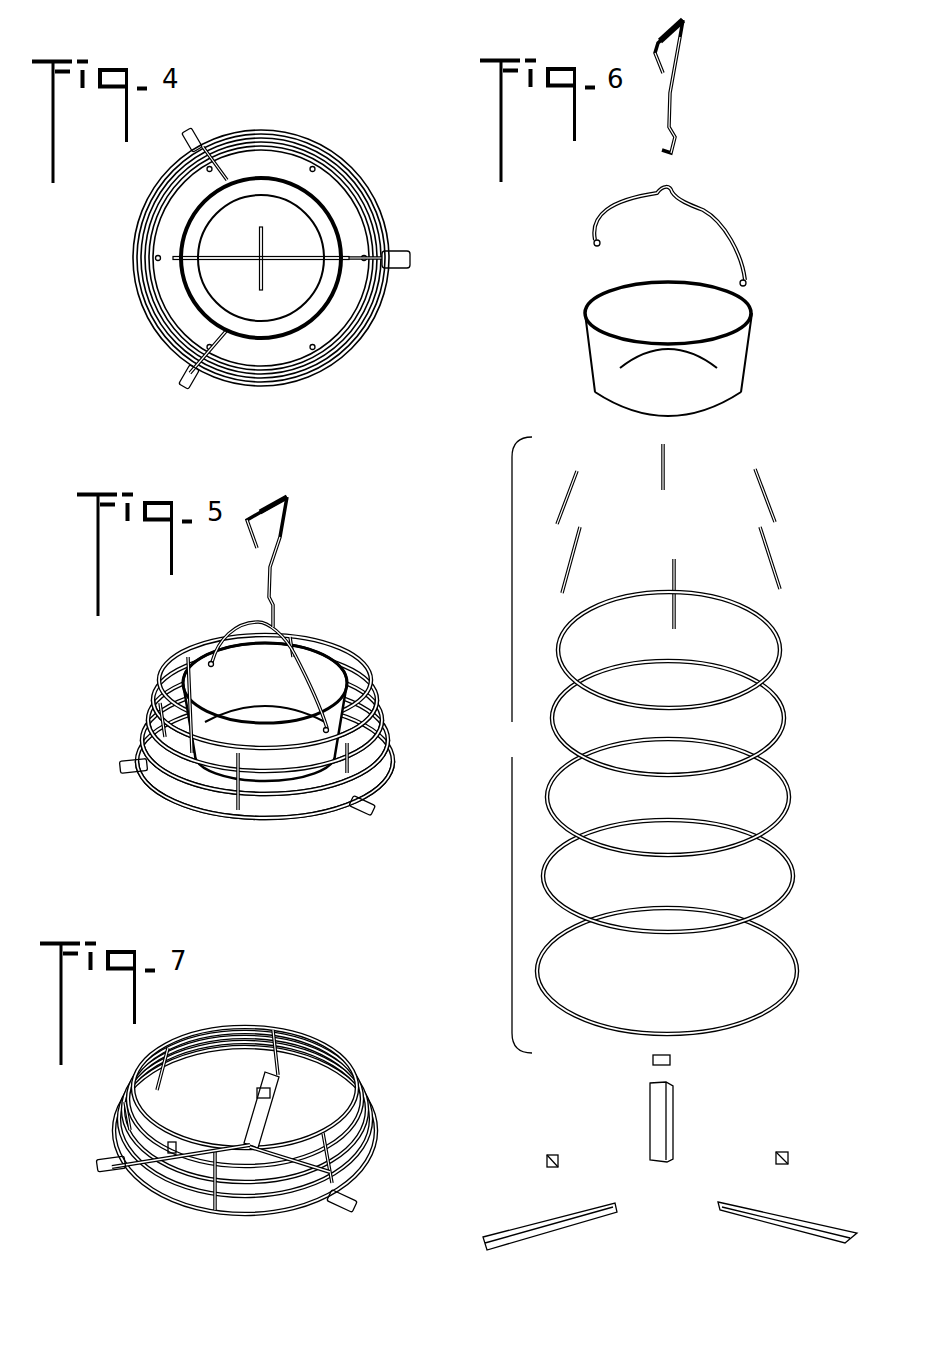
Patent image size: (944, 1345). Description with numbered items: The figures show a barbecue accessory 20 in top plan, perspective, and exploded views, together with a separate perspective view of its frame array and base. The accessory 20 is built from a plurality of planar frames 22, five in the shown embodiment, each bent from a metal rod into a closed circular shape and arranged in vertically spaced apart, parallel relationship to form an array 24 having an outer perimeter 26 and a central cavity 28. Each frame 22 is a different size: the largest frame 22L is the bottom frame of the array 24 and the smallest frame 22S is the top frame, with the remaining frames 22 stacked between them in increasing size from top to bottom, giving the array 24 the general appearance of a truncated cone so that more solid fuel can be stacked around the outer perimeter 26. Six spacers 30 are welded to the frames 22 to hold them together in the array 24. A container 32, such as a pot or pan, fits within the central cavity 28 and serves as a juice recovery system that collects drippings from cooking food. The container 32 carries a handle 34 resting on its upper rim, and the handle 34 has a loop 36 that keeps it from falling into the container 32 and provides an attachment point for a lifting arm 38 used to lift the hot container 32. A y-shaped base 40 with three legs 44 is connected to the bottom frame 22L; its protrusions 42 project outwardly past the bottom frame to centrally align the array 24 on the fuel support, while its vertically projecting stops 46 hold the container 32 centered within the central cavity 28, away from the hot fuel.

In FIG. 4, the barbecue accessory 20 is at (327, 120).
In FIG. 5, the barbecue accessory 20 is at (345, 598).
In FIG. 6, the barbecue accessory 20 is at (770, 147).
In FIG. 4, the planar frame 22 is at (345, 178).
In FIG. 5, the planar frame 22 is at (390, 742).
In FIG. 6, the planar frame 22 is at (780, 729).
In FIG. 7, the planar frame 22 is at (373, 1128).
In FIG. 4, the largest frame 22L is at (133, 282).
In FIG. 5, the largest frame 22L is at (380, 785).
In FIG. 6, the largest frame 22L is at (792, 968).
In FIG. 7, the largest frame 22L is at (367, 1173).
In FIG. 4, the smallest frame 22S is at (155, 250).
In FIG. 5, the smallest frame 22S is at (375, 695).
In FIG. 6, the smallest frame 22S is at (780, 657).
In FIG. 7, the smallest frame 22S is at (355, 1088).
In FIG. 4, the array 24 is at (392, 213).
In FIG. 5, the array 24 is at (375, 665).
In FIG. 6, the array 24 is at (676, 745).
In FIG. 7, the array 24 is at (350, 1050).
In FIG. 4, the outer perimeter 26 is at (390, 313).
In FIG. 5, the outer perimeter 26 is at (330, 818).
In FIG. 7, the outer perimeter 26 is at (307, 1222).
In FIG. 4, the central cavity 28 is at (182, 208).
In FIG. 5, the central cavity 28 is at (350, 712).
In FIG. 7, the central cavity 28 is at (283, 1100).
In FIG. 4, the spacer 30 is at (167, 347).
In FIG. 5, the spacer 30 is at (163, 680).
In FIG. 6, the spacer 30 is at (768, 507).
In FIG. 7, the spacer 30 is at (148, 1082).
In FIG. 4, the container 32 is at (250, 213).
In FIG. 5, the container 32 is at (207, 735).
In FIG. 6, the container 32 is at (728, 365).
In FIG. 4, the handle 34 is at (223, 260).
In FIG. 5, the handle 34 is at (256, 661).
In FIG. 6, the handle 34 is at (670, 218).
In FIG. 5, the loop 36 is at (276, 628).
In FIG. 6, the loop 36 is at (660, 190).
In FIG. 4, the lifting arm 38 is at (263, 245).
In FIG. 5, the lifting arm 38 is at (280, 540).
In FIG. 6, the lifting arm 38 is at (672, 108).
In FIG. 6, the base 40 is at (729, 1118).
In FIG. 7, the base 40 is at (273, 1137).
In FIG. 4, the protrusion 42 is at (197, 130).
In FIG. 5, the protrusion 42 is at (122, 763).
In FIG. 7, the protrusion 42 is at (100, 1166).
In FIG. 6, the leg 44 is at (641, 1117).
In FIG. 7, the leg 44 is at (243, 1135).
In FIG. 6, the stop 46 is at (671, 1061).
In FIG. 7, the stop 46 is at (172, 1145).